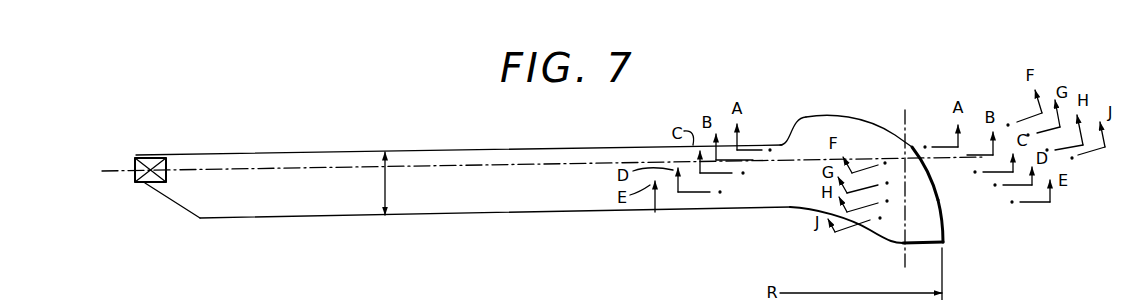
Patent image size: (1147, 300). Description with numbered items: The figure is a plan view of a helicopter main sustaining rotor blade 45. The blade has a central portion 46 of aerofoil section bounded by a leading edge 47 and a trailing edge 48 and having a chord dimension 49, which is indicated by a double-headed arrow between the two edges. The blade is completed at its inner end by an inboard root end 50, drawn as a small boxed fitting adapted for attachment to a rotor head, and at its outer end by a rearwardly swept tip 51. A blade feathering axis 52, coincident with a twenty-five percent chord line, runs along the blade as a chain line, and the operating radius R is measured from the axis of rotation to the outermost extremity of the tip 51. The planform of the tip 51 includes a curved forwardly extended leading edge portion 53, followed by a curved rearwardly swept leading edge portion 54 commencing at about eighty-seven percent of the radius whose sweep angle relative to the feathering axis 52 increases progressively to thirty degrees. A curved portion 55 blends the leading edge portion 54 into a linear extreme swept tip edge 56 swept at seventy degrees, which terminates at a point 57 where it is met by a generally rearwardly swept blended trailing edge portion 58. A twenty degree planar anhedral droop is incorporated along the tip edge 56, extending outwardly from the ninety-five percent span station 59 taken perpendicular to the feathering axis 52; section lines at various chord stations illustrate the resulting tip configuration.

The rotor blade 45 is at (402, 140).
The central portion 46 is at (343, 157).
The leading edge 47 is at (258, 152).
The trailing edge 48 is at (282, 219).
The chord dimension 49 is at (385, 183).
The inboard root end 50 is at (141, 183).
The rearwardly swept tip 51 is at (867, 118).
The blade feathering axis 52 is at (460, 162).
The forwardly extended leading edge portion 53 is at (781, 124).
The rearwardly swept leading edge portion 54 is at (827, 113).
The curved portion 55 is at (912, 147).
The extreme swept tip edge 56 is at (935, 202).
The point 57 is at (947, 241).
The blended trailing edge portion 58 is at (878, 237).
The 95 percent span station 59 is at (908, 250).